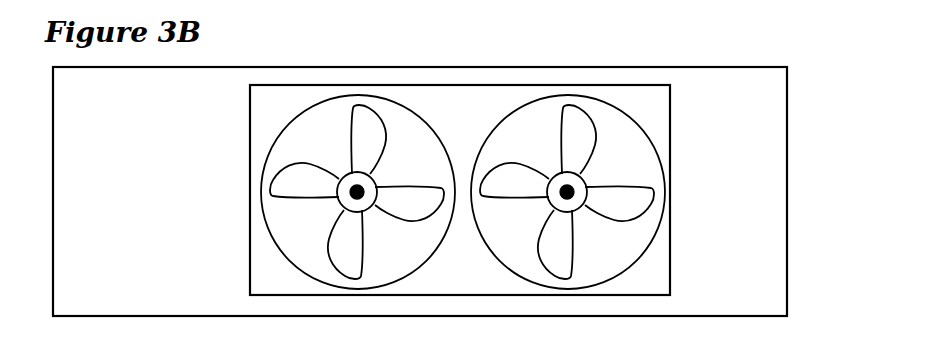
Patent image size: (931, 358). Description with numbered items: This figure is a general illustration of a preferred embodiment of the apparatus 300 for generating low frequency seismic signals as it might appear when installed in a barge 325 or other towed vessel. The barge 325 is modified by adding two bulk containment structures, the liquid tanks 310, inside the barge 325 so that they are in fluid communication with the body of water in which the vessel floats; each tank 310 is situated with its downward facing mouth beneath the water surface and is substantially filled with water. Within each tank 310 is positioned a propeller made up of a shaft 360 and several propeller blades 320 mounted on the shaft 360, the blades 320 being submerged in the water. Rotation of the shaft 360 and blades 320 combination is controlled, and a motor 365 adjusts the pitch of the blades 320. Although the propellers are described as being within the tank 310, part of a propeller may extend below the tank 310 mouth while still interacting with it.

The apparatus 300 is at (513, 97).
The liquid tank 310 is at (272, 142).
The propeller blade 320 is at (285, 180).
The barge 325 is at (588, 316).
The shaft 360 is at (350, 187).
The motor 365 is at (368, 173).